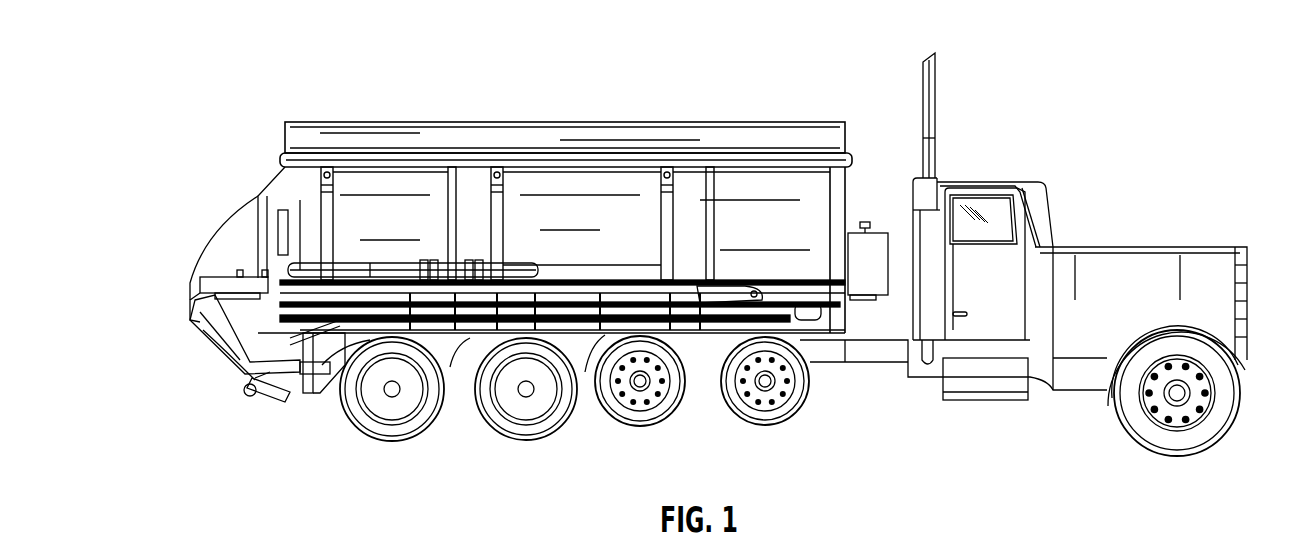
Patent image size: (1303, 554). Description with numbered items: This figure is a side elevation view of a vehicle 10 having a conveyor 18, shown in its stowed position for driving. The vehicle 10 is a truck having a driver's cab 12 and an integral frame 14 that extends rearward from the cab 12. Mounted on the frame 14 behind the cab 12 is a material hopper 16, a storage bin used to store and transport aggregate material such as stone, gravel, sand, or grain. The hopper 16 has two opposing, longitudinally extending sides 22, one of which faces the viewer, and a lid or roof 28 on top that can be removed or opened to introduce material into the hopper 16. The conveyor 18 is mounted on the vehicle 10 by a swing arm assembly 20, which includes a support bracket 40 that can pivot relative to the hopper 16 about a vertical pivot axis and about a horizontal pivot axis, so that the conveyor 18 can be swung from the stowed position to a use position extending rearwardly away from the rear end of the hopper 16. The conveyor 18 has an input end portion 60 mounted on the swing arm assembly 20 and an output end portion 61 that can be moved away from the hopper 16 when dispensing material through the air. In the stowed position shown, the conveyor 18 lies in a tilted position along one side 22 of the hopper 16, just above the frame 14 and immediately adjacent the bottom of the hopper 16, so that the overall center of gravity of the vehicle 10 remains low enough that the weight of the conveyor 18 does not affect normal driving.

The vehicle 10 is at (312, 57).
The driver's cab 12 is at (1046, 184).
The frame 14 is at (861, 356).
The material hopper 16 is at (517, 139).
The conveyor 18 is at (475, 392).
The swing arm assembly 20 is at (215, 360).
The side 22 is at (612, 183).
The lid 28 is at (456, 121).
The support bracket 40 is at (256, 386).
The input end portion 60 is at (228, 280).
The output end portion 61 is at (720, 312).